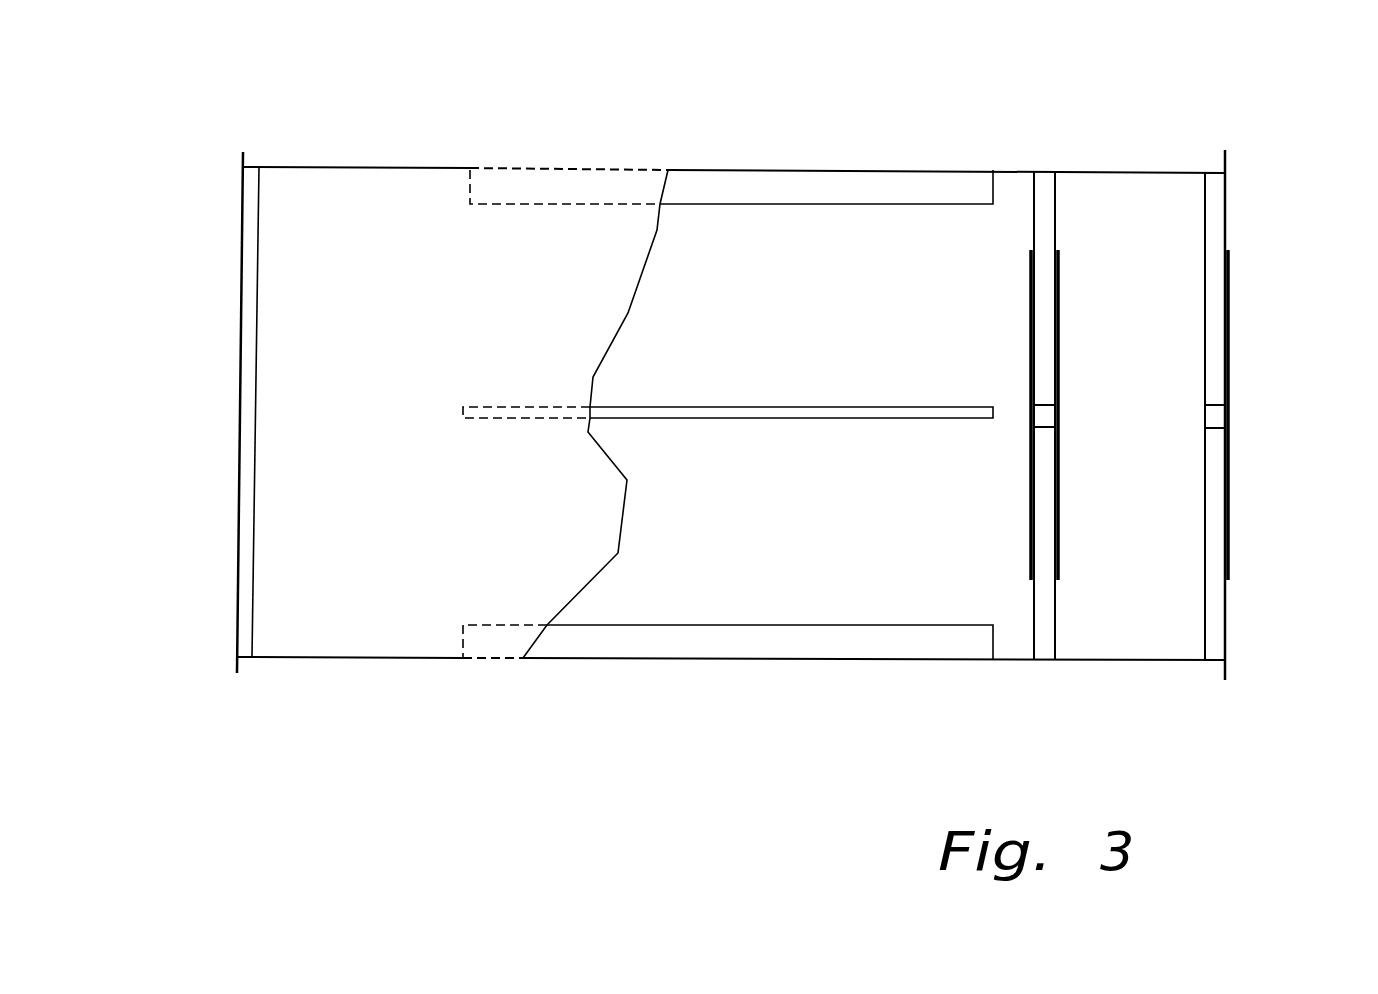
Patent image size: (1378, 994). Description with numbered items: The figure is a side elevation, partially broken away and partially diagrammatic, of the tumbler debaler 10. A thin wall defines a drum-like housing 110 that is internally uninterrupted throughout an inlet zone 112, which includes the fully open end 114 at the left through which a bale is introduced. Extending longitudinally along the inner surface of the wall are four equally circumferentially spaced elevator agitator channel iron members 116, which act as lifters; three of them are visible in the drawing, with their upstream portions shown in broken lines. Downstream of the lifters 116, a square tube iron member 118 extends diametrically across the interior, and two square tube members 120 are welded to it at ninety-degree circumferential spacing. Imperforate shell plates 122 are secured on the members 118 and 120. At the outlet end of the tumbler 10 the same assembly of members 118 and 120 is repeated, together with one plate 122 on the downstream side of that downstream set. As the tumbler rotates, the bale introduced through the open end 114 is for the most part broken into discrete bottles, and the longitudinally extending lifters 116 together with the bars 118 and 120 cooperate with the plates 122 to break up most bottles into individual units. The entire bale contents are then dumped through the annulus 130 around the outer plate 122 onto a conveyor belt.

The tumbler debaler 10 is at (363, 747).
The drum-like housing 110 is at (394, 167).
The inlet zone 112 is at (440, 492).
The fully open end 114 is at (238, 456).
The elevator agitator channel iron members 116 is at (935, 190).
The square tube iron member 118 is at (1057, 200).
The square tube members 120 is at (1042, 405).
The imperforate shell plates 122 is at (1272, 547).
The annulus 130 is at (1217, 238).